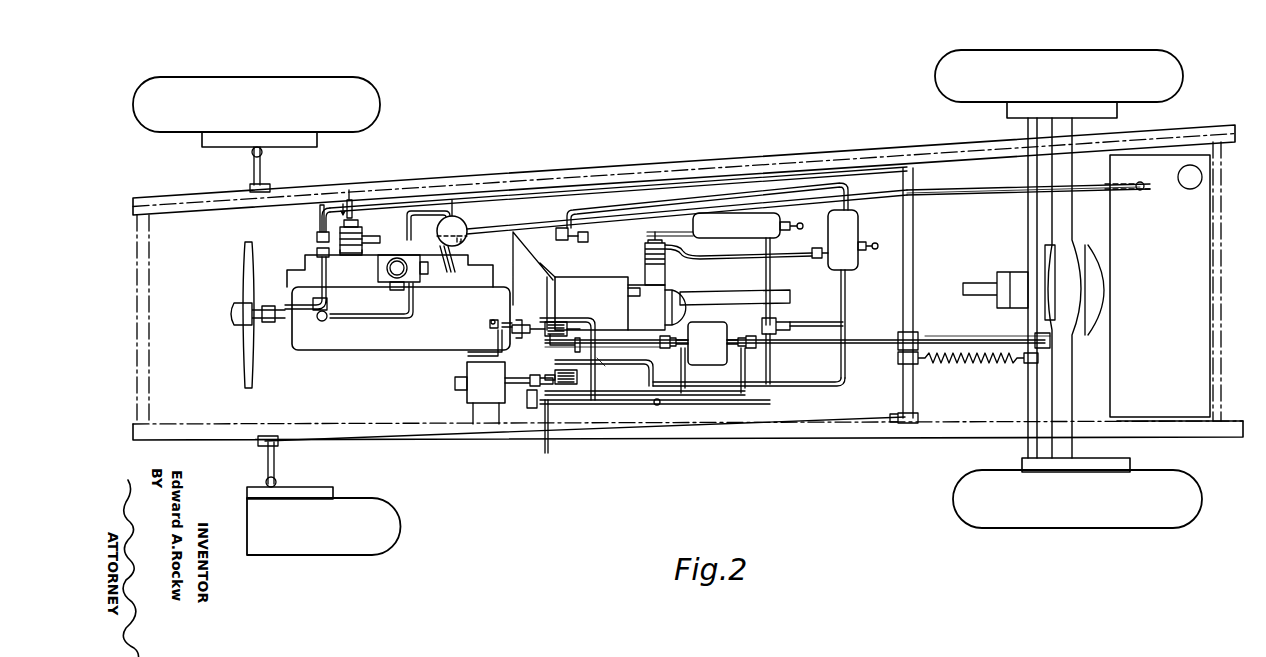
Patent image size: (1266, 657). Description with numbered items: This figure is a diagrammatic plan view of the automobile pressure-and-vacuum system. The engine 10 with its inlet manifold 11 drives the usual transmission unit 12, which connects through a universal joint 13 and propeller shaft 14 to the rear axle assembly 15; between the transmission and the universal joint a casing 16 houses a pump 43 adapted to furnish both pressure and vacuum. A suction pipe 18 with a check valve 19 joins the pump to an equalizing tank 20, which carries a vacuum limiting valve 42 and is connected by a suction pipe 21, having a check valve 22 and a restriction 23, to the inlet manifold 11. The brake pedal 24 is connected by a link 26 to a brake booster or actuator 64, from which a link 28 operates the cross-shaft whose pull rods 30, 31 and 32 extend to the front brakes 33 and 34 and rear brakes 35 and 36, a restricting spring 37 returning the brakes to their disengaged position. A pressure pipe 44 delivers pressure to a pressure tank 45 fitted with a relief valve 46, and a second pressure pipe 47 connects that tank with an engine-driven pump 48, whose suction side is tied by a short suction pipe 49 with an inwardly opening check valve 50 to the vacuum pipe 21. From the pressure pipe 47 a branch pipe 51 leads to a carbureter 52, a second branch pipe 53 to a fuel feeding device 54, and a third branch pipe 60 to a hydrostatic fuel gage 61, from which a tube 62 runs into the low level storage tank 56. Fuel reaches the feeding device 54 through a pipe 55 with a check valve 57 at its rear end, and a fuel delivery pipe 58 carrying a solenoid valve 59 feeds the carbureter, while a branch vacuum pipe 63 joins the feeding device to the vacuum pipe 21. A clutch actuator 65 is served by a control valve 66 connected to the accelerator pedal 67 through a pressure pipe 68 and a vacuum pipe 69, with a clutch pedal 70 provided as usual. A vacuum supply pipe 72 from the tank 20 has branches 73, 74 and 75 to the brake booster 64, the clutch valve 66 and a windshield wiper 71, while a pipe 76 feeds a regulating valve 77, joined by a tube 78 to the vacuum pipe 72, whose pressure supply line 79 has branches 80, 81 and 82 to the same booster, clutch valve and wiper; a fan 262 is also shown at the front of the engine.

The engine 10 is at (372, 330).
The inlet manifold 11 is at (320, 271).
The transmission unit 12 is at (607, 279).
The universal joint 13 is at (670, 315).
The propeller shaft 14 is at (697, 298).
The rear axle assembly 15 is at (1070, 268).
The casing 16 is at (648, 310).
The suction pipe 18 is at (728, 258).
The check valve 19 is at (819, 258).
The equalizing tank 20 is at (858, 265).
The suction pipe 21 is at (395, 200).
The check valve 22 is at (316, 239).
The restriction 23 is at (316, 254).
The brake pedal 24 is at (588, 324).
The link 26 is at (612, 346).
The link 28 is at (886, 344).
The pull rod 30 is at (498, 188).
The pull rod 31 is at (642, 432).
The pull rod 32 is at (958, 336).
The front brake 33 is at (317, 137).
The front brake 34 is at (332, 491).
The rear brake 35 is at (1118, 108).
The rear brake 36 is at (1128, 463).
The restricting spring 37 is at (968, 362).
The vacuum release or limiting valve 42 is at (870, 245).
The pump 43 is at (645, 245).
The pressure pipe 44 is at (680, 230).
The pressure tank 45 is at (735, 222).
The relief or pressure limiting valve 46 is at (797, 228).
The second pressure pipe 47 is at (530, 228).
The pump 48 is at (362, 226).
The short suction pipe 49 is at (353, 226).
The check valve 50 is at (347, 206).
The branch pipe 51 is at (380, 252).
The carbureter 52 is at (393, 280).
The second branch pipe 53 is at (452, 245).
The fuel feeding device 54 is at (468, 236).
The pipe 55 is at (950, 190).
The low level storage tank 56 is at (1204, 221).
The check valve 57 is at (1142, 182).
The fuel delivery pipe 58 is at (453, 216).
The solenoid valve 59 is at (450, 214).
The third branch pipe 60 is at (556, 236).
The hydrostatic fuel gage 61 is at (584, 237).
The tube 62 is at (980, 196).
The branch vacuum pipe 63 is at (458, 232).
The brake booster or actuator 64 is at (716, 362).
The clutch actuator 65 is at (488, 405).
The control valve 66 is at (524, 324).
The accelerator pedal 67 is at (558, 330).
The pressure pipe 68 is at (490, 324).
The vacuum pipe 69 is at (467, 353).
The clutch pedal 70 is at (566, 386).
The windshield wiper 71 is at (530, 410).
The vacuum supply pipe 72 is at (846, 384).
The branch 73 is at (684, 370).
The branch 74 is at (642, 379).
The branch 75 is at (627, 393).
The pipe 76 is at (770, 272).
The regulating valve 77 is at (762, 327).
The tube 78 is at (808, 326).
The pressure supply line 79 is at (771, 369).
The branch 80 is at (744, 368).
The branch 81 is at (596, 364).
The branch 82 is at (580, 406).
The fan 262 is at (246, 342).